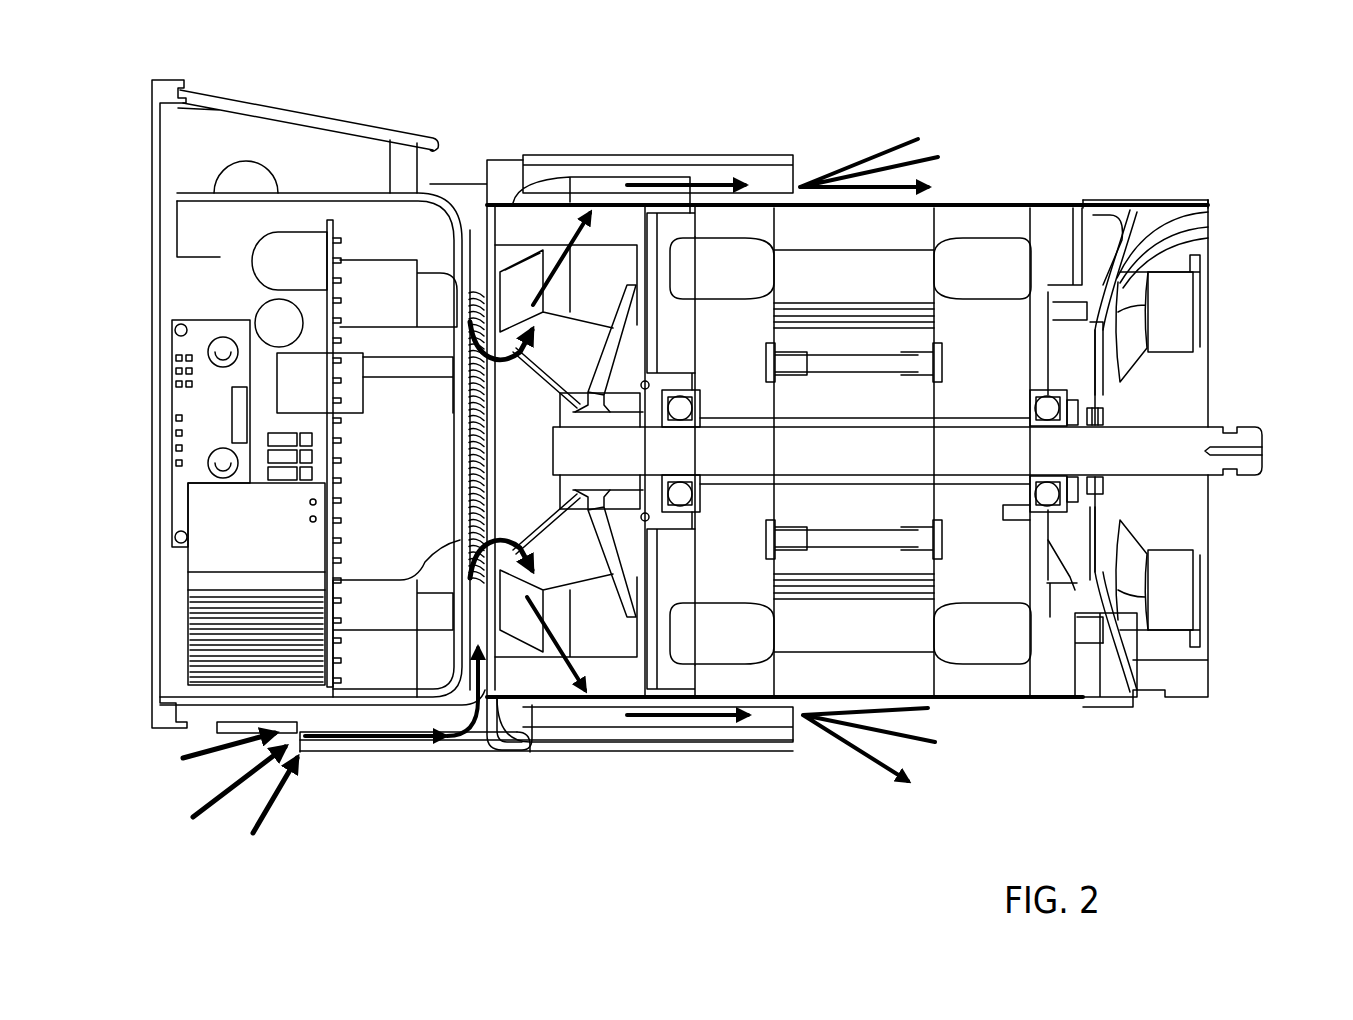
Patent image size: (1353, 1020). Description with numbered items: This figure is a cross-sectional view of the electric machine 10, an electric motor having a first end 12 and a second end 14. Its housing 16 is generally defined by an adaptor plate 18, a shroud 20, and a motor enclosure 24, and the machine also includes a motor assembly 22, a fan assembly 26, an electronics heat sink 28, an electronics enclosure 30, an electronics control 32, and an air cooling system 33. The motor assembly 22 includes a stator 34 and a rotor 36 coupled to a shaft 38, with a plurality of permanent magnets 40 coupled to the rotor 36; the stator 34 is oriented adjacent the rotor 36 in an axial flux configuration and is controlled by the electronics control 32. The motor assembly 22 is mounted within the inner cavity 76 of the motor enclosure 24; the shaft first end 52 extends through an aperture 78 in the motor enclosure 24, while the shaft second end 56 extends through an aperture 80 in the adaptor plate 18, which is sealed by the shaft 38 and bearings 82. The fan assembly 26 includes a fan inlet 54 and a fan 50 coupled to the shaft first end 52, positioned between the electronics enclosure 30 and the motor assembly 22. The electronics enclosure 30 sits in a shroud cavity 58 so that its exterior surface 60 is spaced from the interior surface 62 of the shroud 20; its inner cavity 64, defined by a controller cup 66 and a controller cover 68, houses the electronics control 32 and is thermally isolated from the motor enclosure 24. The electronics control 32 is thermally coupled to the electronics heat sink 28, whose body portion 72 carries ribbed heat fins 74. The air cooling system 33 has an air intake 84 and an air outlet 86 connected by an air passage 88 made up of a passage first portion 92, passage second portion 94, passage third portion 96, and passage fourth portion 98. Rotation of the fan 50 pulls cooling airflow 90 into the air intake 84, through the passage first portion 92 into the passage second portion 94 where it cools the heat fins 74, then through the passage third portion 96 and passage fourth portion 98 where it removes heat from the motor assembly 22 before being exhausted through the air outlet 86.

The electric machine 10 is at (1200, 182).
The first end 12 is at (455, 165).
The second end 14 is at (1222, 238).
The housing 16 is at (1000, 195).
The adaptor plate 18 is at (1125, 210).
The shroud 20 is at (565, 155).
The motor assembly 22 is at (975, 700).
The motor enclosure 24 is at (1047, 707).
The fan assembly 26 is at (668, 690).
The electronics heat sink 28 is at (407, 720).
The electronics enclosure 30 is at (165, 470).
The electronics control 32 is at (235, 628).
The air cooling system 33 is at (490, 740).
The stator 34 is at (800, 672).
The rotor 36 is at (878, 562).
The shaft 38 is at (1172, 467).
The permanent magnets 40 is at (945, 205).
The fan 50 is at (597, 323).
The shaft first end 52 is at (577, 500).
The fan inlet 54 is at (487, 293).
The shaft second end 56 is at (1270, 450).
The shroud cavity 58 is at (335, 735).
The exterior surface 60 is at (447, 727).
The interior surface 62 is at (470, 200).
The inner cavity 64 is at (222, 270).
The controller cup 66 is at (188, 712).
The controller cover 68 is at (165, 548).
The body portion 72 is at (300, 752).
The heat fins 74 is at (224, 724).
The inner cavity 76 is at (1020, 225).
The aperture 78 is at (683, 384).
The aperture 80 is at (1110, 407).
The bearings 82 is at (1103, 505).
The air intake 84 is at (283, 840).
The air outlet 86 is at (805, 185).
The air passage 88 is at (462, 196).
The cooling airflow 90 is at (258, 820).
The passage first portion 92 is at (377, 740).
The passage second portion 94 is at (330, 693).
The passage third portion 96 is at (681, 517).
The passage fourth portion 98 is at (710, 185).